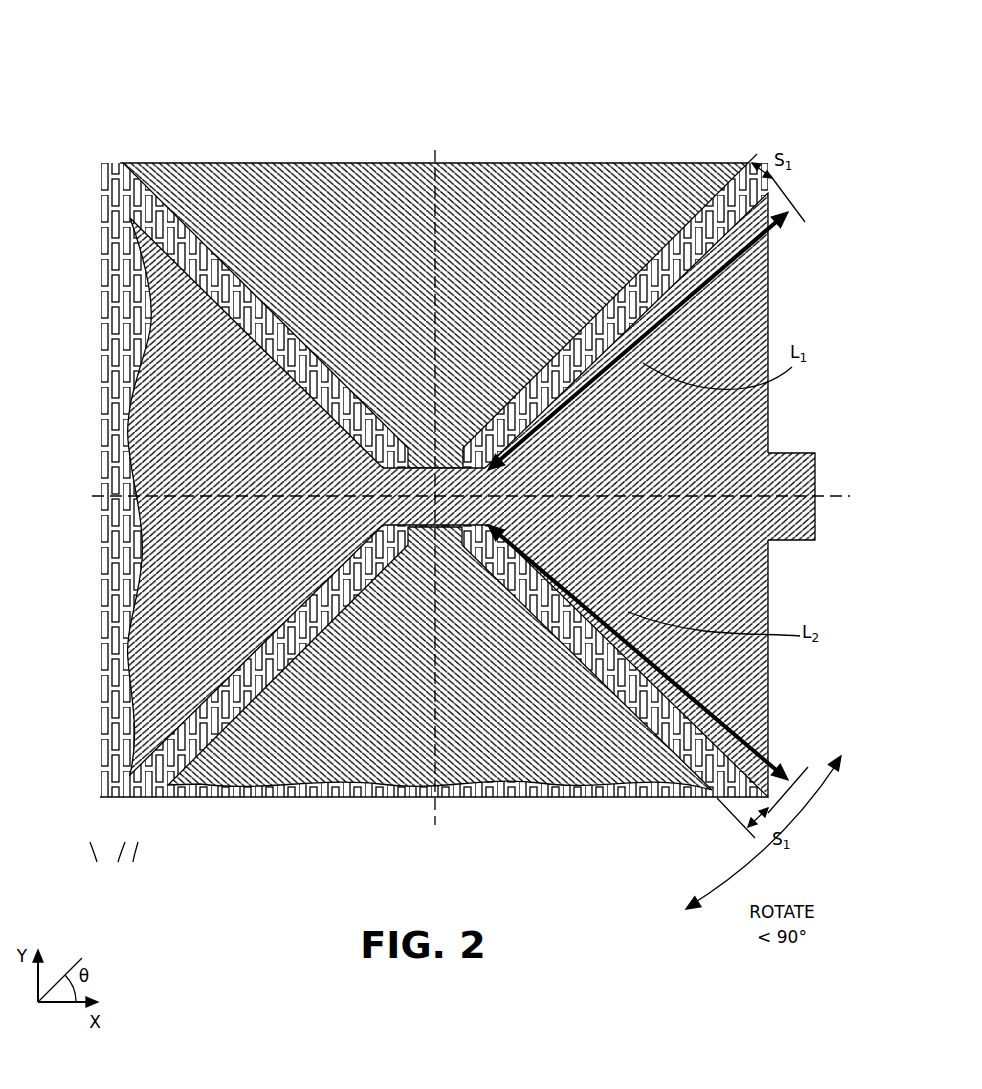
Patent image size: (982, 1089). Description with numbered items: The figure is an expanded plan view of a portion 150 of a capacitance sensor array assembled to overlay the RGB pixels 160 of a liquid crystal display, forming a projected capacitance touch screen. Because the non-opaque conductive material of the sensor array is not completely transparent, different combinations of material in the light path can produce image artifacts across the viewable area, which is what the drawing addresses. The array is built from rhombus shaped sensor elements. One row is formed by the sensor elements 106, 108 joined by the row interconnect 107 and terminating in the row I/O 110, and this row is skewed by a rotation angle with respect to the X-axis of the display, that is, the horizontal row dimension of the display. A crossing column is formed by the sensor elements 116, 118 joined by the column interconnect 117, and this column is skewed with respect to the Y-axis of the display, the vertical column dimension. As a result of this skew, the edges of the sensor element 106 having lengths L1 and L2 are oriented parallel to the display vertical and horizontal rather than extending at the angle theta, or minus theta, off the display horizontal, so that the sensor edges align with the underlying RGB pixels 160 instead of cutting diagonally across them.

The portion of the capacitance sensor array 150 is at (118, 113).
The sensor element 118 is at (383, 278).
The sensor element 108 is at (195, 447).
The row interconnect 107 is at (420, 506).
The sensor element 106 is at (662, 457).
The row I/O 110 is at (790, 452).
The sensor element 116 is at (471, 700).
The column interconnect 117 is at (420, 553).
The RGB pixels 160 is at (143, 884).